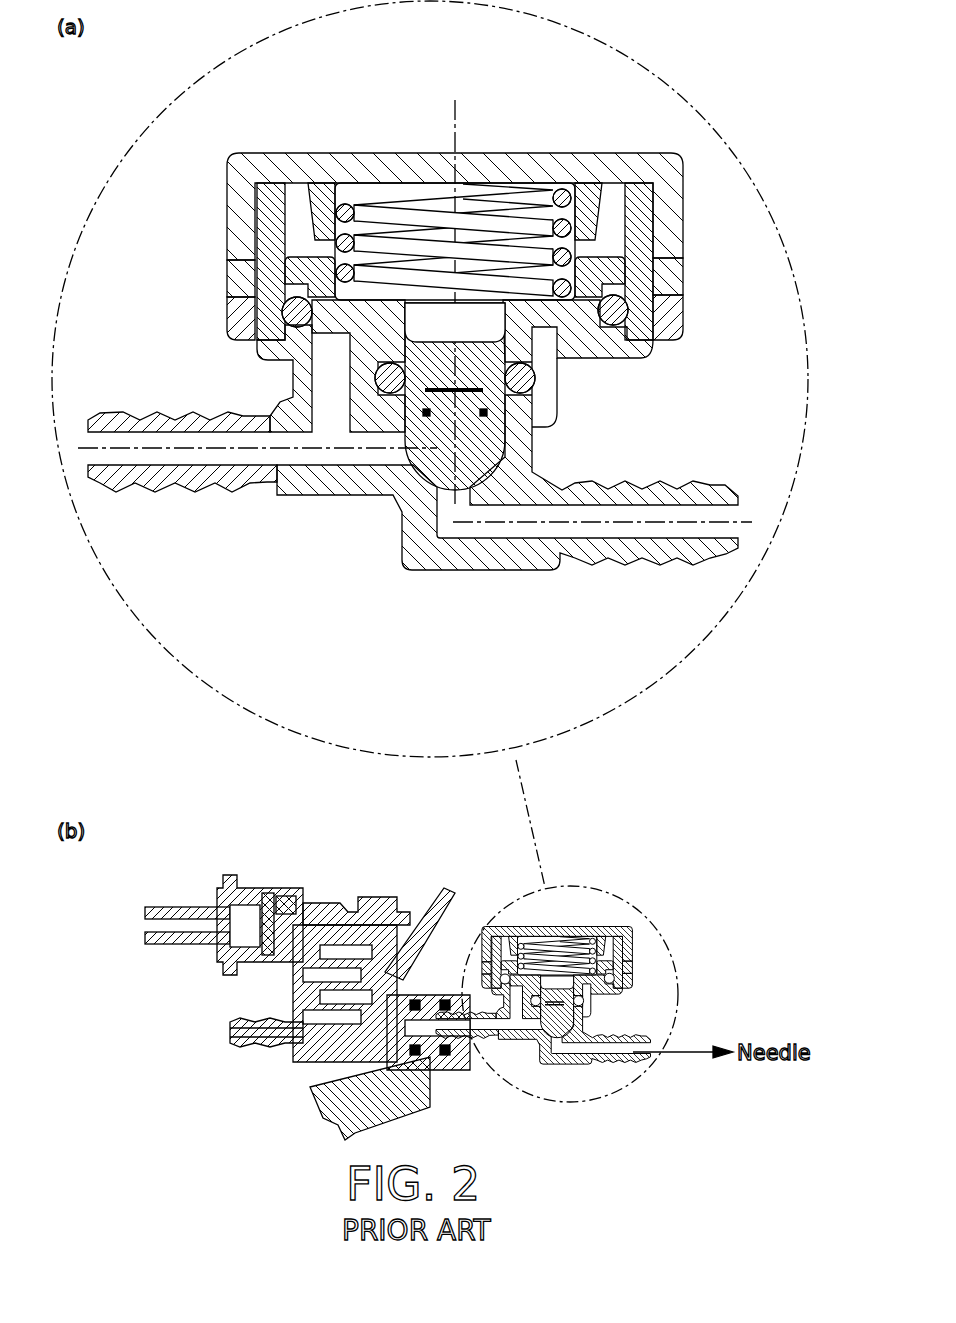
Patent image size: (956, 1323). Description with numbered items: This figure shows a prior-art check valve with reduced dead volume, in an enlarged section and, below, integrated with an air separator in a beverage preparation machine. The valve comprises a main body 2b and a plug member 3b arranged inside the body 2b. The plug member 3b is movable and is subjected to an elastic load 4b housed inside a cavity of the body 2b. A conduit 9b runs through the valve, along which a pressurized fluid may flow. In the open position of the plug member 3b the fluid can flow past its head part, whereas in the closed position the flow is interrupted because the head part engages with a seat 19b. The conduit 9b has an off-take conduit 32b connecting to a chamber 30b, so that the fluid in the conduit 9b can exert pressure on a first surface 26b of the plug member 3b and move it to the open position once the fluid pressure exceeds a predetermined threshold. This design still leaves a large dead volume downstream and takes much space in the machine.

The main body 2b is at (668, 186).
The elastic load 4b is at (399, 216).
The chamber 30b is at (283, 312).
The first surface 26b is at (351, 333).
The off-take conduit 32b is at (323, 383).
The conduit 9b is at (140, 457).
The seat 19b is at (433, 467).
The plug member 3b is at (560, 348).